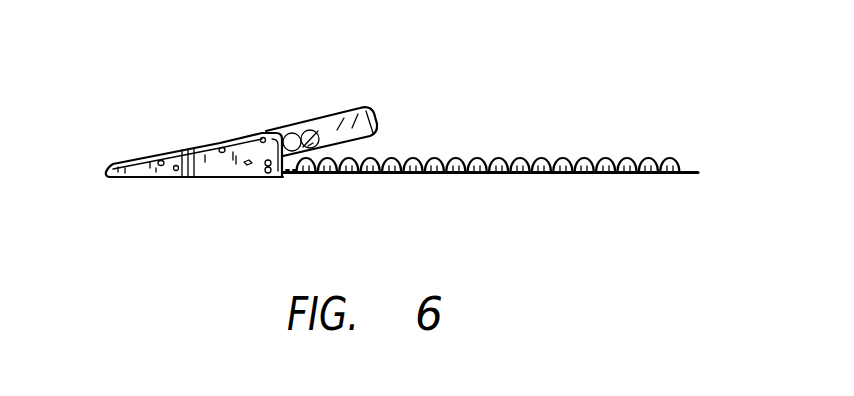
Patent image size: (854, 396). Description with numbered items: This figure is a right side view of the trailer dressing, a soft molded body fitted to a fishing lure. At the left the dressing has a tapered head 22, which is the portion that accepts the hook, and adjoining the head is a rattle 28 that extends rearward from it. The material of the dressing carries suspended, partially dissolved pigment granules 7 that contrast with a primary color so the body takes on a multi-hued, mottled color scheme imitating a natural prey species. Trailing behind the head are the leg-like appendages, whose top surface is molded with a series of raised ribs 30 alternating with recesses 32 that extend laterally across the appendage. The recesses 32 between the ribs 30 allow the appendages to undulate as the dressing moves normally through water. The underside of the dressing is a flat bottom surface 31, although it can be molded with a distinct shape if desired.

The tapered head 22 is at (187, 148).
The pigment granules 7 is at (248, 162).
The rattle 28 is at (367, 123).
The raised ribs 30 is at (437, 160).
The bottom surface 31 is at (462, 173).
The recesses 32 is at (598, 167).